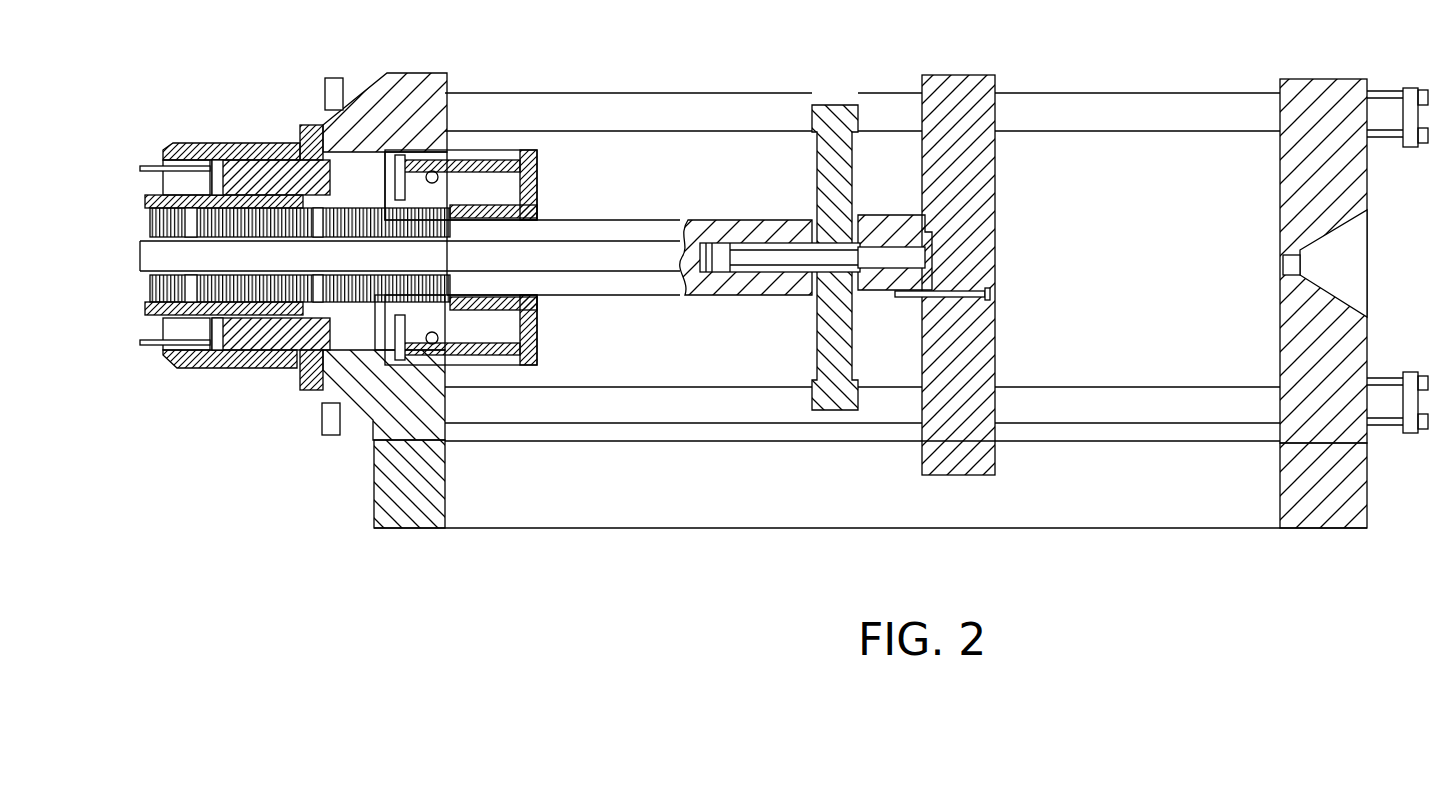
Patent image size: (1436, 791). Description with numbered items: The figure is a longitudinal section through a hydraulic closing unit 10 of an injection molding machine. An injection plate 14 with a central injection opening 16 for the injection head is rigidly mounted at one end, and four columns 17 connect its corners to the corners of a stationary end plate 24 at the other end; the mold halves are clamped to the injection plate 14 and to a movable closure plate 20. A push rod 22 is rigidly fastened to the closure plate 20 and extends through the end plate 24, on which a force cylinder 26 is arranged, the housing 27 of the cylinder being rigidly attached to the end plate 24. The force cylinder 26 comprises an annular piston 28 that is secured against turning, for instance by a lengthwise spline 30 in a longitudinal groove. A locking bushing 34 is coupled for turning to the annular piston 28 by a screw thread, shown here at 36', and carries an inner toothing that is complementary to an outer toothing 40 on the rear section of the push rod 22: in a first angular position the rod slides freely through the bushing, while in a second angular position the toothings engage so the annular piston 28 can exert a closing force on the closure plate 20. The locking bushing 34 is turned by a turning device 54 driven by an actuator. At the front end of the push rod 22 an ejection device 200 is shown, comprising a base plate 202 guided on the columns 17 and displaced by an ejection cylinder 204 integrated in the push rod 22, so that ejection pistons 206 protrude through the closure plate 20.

The closing unit 10 is at (740, 560).
The injection plate 14 is at (1332, 512).
The central injection opening 16 is at (1352, 280).
The columns 17 is at (660, 105).
The movable closure plate 20 is at (975, 457).
The push rod 22 is at (603, 232).
The end plate 24 is at (415, 505).
The force cylinder 26 is at (204, 134).
The housing 27 is at (237, 360).
The annular piston 28 is at (255, 180).
The lengthwise spline 30 is at (348, 185).
The locking bushing 34 is at (333, 365).
The spacer 36' is at (340, 197).
The outer toothing 40 is at (150, 236).
The turning device 54 is at (492, 140).
The ejection device 200 is at (800, 190).
The base plate 202 is at (838, 395).
The ejection cylinder 204 is at (760, 258).
The ejection pistons 206 is at (937, 257).